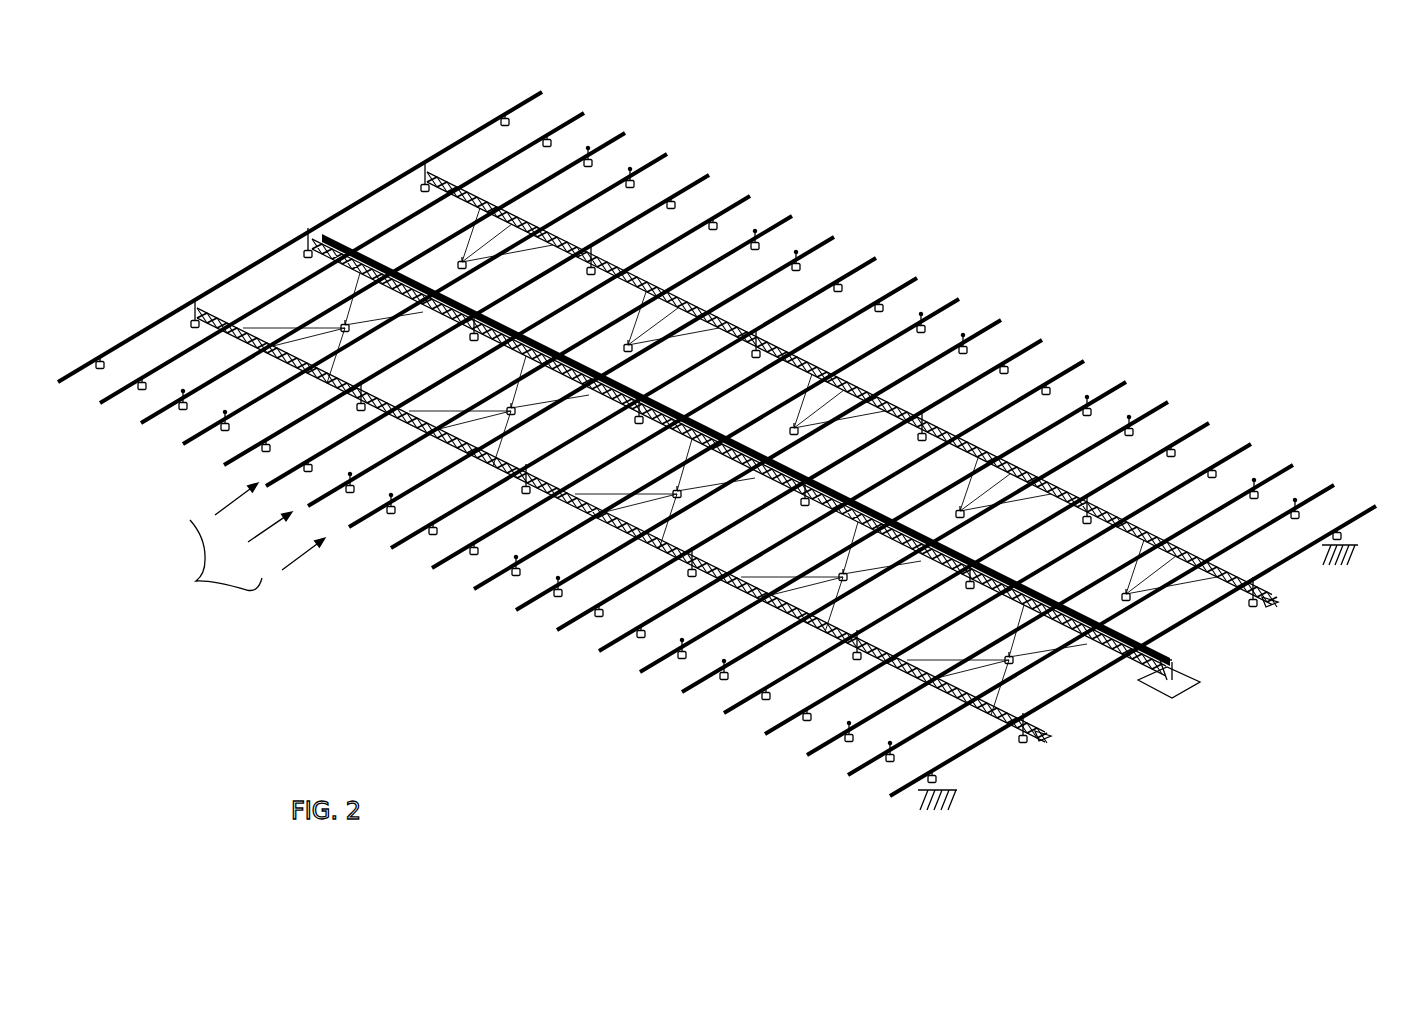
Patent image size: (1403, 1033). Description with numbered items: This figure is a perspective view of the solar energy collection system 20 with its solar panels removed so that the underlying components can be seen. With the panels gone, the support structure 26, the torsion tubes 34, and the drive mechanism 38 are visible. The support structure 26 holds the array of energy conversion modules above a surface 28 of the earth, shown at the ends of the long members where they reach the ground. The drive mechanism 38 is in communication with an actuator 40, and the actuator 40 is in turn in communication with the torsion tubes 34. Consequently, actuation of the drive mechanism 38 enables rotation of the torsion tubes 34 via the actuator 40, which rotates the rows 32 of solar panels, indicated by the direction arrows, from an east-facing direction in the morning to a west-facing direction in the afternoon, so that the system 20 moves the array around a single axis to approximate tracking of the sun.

The solar energy collection system 20 is at (480, 764).
The support structure 26 is at (370, 168).
The surface of the earth 28 is at (953, 799).
The rows of solar panels 32 is at (255, 556).
The torsion tubes 34 is at (733, 197).
The drive mechanism 38 is at (1195, 705).
The actuator 40 is at (1167, 643).